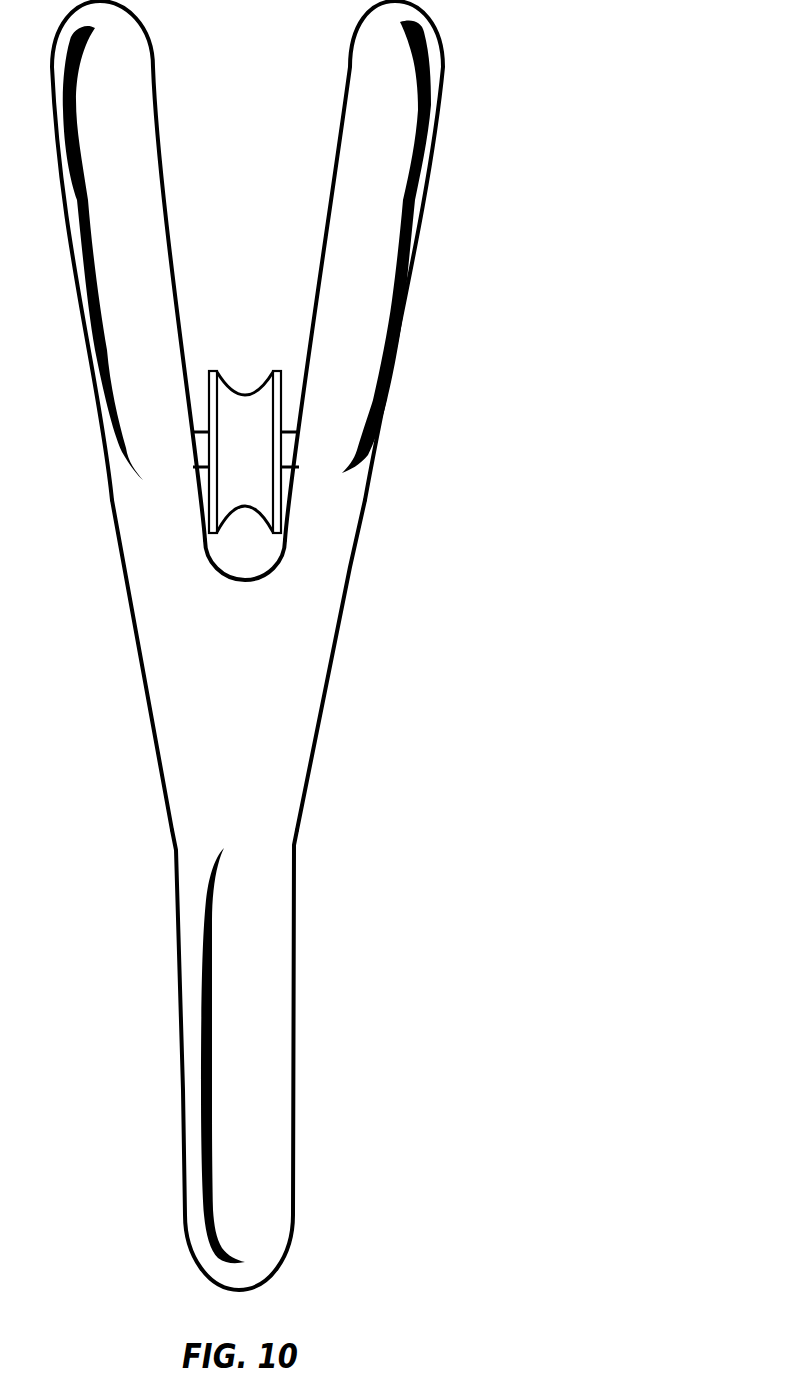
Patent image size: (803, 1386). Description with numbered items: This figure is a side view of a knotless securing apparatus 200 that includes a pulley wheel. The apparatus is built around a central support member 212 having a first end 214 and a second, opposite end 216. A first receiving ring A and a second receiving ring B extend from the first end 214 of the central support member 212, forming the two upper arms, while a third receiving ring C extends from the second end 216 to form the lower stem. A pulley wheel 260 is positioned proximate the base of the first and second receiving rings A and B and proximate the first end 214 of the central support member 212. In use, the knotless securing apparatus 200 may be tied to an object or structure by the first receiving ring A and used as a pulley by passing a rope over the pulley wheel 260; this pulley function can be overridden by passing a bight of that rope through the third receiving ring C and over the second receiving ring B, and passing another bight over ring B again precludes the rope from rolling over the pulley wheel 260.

The knotless securing apparatus 200 is at (462, 261).
The central support member 212 is at (271, 685).
The first end 214 is at (285, 580).
The second, opposite end 216 is at (265, 797).
The pulley wheel 260 is at (316, 441).